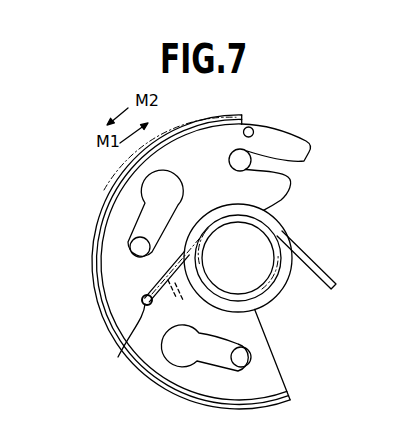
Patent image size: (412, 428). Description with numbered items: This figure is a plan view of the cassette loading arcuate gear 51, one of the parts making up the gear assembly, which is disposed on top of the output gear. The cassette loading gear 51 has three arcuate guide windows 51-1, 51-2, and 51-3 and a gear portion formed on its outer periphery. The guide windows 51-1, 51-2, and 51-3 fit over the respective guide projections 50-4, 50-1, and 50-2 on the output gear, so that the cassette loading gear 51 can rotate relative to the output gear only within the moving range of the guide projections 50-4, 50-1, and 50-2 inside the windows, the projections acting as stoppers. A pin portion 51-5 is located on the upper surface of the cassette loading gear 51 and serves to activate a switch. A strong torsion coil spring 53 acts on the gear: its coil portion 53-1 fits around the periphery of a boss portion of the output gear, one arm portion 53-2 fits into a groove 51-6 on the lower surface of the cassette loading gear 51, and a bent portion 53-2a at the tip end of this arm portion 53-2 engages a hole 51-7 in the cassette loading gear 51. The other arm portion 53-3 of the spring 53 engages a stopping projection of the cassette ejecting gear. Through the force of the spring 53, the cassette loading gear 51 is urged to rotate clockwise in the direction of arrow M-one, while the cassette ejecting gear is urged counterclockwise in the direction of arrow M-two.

The cassette loading arcuate gear 51 is at (340, 99).
The arcuate guide window 51-1 is at (187, 357).
The arcuate guide window 51-2 is at (137, 224).
The arcuate guide window 51-3 is at (276, 173).
The pin portion 51-5 is at (250, 127).
The groove 51-6 is at (180, 300).
The hole 51-7 is at (121, 346).
The guide projection 50-1 is at (130, 247).
The guide projection 50-2 is at (229, 160).
The guide projection 50-4 is at (252, 357).
The torsion coil spring 53 is at (205, 260).
The coil portion 53-1 is at (268, 296).
The arm portion 53-2 is at (174, 266).
The bent portion 53-2a is at (142, 300).
The arm portion 53-3 is at (322, 262).